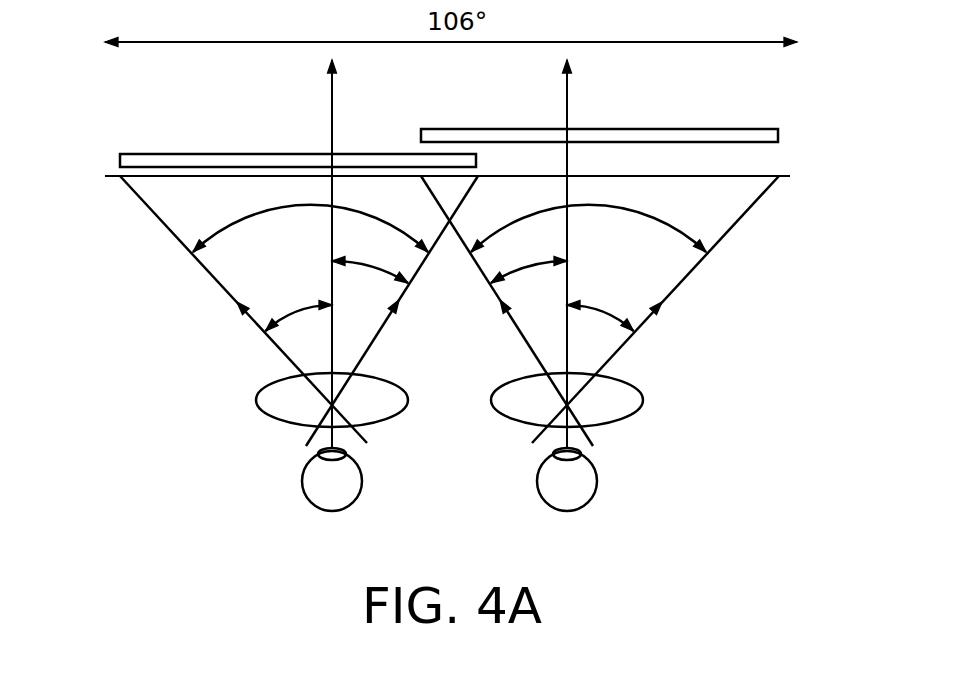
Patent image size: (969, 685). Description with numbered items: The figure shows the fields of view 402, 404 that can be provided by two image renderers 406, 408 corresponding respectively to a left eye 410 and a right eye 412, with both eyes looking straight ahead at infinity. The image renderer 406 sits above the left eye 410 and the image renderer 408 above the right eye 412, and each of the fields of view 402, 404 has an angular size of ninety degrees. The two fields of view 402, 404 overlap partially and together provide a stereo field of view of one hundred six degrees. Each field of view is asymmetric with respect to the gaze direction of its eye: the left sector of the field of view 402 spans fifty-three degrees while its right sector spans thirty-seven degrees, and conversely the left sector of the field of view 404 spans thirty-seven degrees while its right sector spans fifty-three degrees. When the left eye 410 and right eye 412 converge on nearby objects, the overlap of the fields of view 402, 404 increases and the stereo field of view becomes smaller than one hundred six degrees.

The field of view 402 is at (187, 305).
The field of view 404 is at (712, 305).
The image renderer 406 is at (120, 160).
The image renderer 408 is at (778, 134).
The left eye 410 is at (302, 485).
The right eye 412 is at (597, 485).